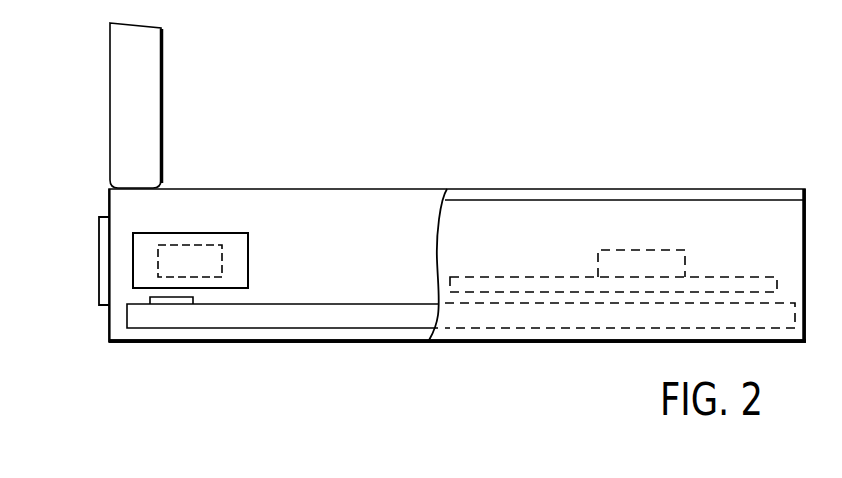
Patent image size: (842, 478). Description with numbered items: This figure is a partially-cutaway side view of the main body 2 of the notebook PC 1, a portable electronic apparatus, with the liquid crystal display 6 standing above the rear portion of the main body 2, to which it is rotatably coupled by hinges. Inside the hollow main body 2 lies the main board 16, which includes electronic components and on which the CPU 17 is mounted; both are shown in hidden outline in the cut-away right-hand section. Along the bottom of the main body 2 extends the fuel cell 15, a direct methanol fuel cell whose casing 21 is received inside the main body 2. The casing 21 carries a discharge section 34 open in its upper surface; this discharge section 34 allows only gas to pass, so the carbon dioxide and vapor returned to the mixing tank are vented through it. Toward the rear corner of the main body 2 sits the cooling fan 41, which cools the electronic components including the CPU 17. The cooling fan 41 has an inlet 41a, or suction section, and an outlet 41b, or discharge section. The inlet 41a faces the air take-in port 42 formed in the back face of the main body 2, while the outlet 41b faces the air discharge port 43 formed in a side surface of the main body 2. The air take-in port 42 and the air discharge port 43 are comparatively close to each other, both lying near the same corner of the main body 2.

The notebook PC 1 is at (263, 86).
The main body 2 is at (392, 189).
The liquid crystal display 6 is at (152, 56).
The fuel cell 15 is at (388, 328).
The main board 16 is at (737, 277).
The CPU 17 is at (641, 250).
The casing 21 is at (295, 316).
The discharge section 34 is at (165, 305).
The cooling fan 41 is at (206, 233).
The inlet 41a is at (133, 247).
The outlet 41b is at (143, 272).
The air take-in port 42 is at (99, 257).
The air discharge port 43 is at (224, 257).